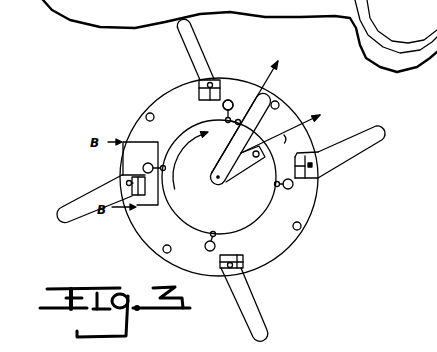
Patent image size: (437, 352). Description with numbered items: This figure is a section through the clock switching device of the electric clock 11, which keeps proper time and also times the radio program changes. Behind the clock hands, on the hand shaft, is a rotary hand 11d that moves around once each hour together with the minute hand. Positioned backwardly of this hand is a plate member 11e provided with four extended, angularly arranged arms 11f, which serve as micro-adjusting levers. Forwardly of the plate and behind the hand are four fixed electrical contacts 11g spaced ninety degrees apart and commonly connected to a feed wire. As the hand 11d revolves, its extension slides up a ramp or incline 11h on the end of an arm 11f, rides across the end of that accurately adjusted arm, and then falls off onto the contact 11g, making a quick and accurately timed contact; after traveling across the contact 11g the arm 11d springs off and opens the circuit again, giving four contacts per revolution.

The clock 11 is at (252, 193).
The hand 11d is at (245, 133).
The plate member 11e is at (313, 200).
The arm 11f is at (197, 50).
The electrical contact 11g is at (232, 102).
The ramp 11h is at (302, 153).